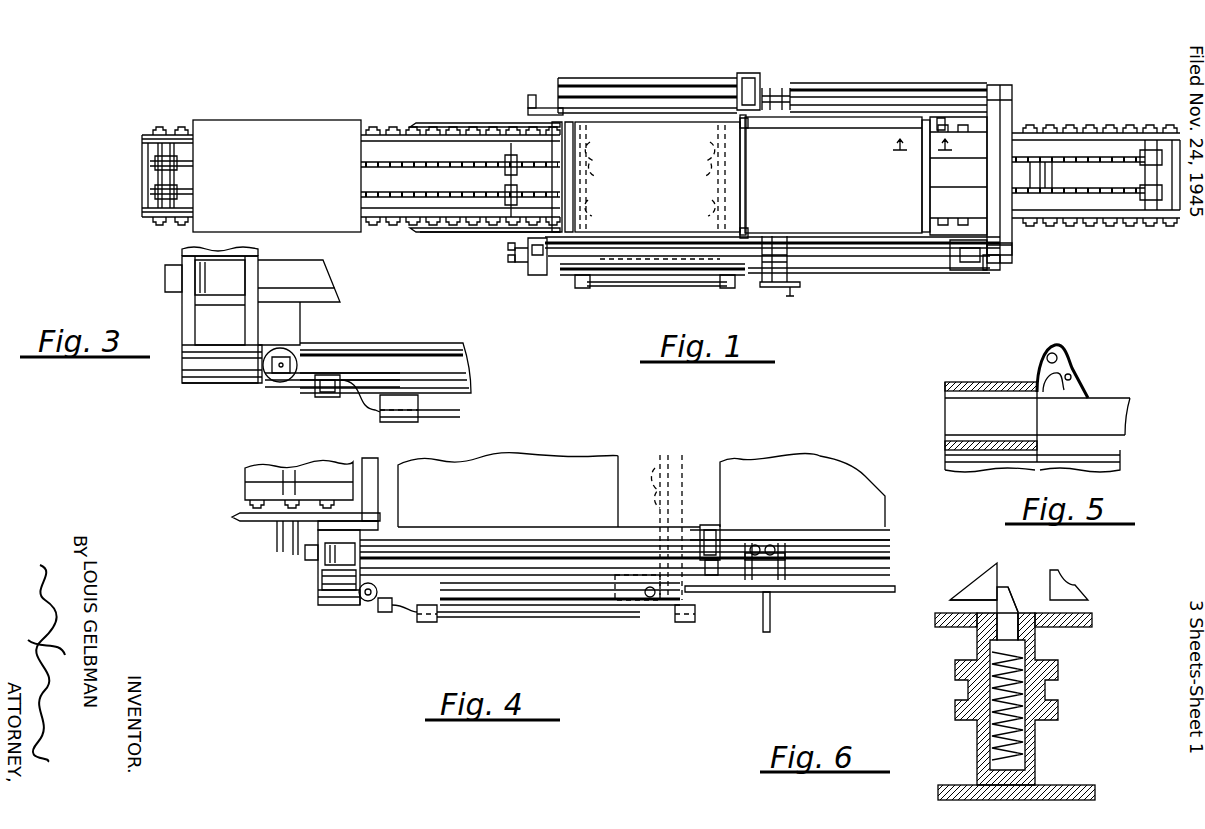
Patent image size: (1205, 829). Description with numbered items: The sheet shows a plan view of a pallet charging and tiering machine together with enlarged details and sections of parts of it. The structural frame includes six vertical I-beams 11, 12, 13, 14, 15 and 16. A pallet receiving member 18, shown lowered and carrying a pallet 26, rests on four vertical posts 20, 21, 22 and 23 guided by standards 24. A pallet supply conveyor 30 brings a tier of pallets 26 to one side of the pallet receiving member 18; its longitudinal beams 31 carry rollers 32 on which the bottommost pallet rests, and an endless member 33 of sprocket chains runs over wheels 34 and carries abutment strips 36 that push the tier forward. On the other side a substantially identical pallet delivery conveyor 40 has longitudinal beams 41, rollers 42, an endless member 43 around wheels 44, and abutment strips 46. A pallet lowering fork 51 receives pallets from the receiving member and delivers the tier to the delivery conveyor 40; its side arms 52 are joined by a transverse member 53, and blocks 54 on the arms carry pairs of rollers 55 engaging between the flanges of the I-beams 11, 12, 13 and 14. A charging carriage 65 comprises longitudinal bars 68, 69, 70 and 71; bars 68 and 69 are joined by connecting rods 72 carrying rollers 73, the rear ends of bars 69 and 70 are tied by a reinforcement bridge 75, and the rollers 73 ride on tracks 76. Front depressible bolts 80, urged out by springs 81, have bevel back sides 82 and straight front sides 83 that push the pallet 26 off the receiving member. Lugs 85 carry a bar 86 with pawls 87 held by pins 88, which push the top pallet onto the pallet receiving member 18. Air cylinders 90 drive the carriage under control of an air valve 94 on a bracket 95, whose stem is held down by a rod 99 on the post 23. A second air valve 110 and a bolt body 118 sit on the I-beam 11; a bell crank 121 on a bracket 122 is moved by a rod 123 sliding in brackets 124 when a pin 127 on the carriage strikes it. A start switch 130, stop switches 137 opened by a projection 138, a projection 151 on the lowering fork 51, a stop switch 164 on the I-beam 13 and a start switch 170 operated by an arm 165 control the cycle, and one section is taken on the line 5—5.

In FIG. 1, the section line 5 is at (952, 150).
In FIG. 1, the vertical I-beam 11 is at (528, 260).
In FIG. 3, the vertical I-beam 11 is at (187, 330).
In FIG. 4, the vertical I-beam 11 is at (322, 573).
In FIG. 1, the vertical I-beam 12 is at (530, 93).
In FIG. 1, the vertical I-beam 13 is at (780, 265).
In FIG. 1, the vertical I-beam 14 is at (780, 90).
In FIG. 1, the vertical I-beam 15 is at (1012, 250).
In FIG. 1, the vertical I-beam 16 is at (1012, 95).
In FIG. 1, the pallet receiving member 18 is at (702, 58).
In FIG. 1, the vertical post 20 is at (595, 203).
In FIG. 1, the vertical post 21 is at (597, 150).
In FIG. 1, the vertical post 22 is at (710, 148).
In FIG. 1, the vertical post 23 is at (710, 200).
In FIG. 4, the vertical post 23 is at (658, 470).
In FIG. 1, the standards 24 is at (597, 220).
In FIG. 1, the pallet 26 is at (675, 128).
In FIG. 4, the pallet 26 is at (790, 483).
In FIG. 5, the pallet 26 is at (958, 438).
In FIG. 6, the pallet 26 is at (1067, 583).
In FIG. 1, the pallet supply conveyor 30 is at (1089, 117).
In FIG. 1, the longitudinal beams 31 is at (1123, 213).
In FIG. 1, the rollers 32 is at (1092, 226).
In FIG. 1, the endless member 33 is at (1052, 190).
In FIG. 1, the wheels 34 is at (1145, 190).
In FIG. 1, the abutment strips 36 is at (1135, 175).
In FIG. 1, the pallet delivery conveyor 40 is at (132, 216).
In FIG. 1, the longitudinal beams 41 is at (142, 216).
In FIG. 4, the longitudinal beams 41 is at (245, 488).
In FIG. 1, the rollers 42 is at (162, 226).
In FIG. 4, the rollers 42 is at (245, 505).
In FIG. 1, the endless member 43 is at (423, 195).
In FIG. 1, the wheels 44 is at (492, 189).
In FIG. 1, the abutment strips 46 is at (376, 178).
In FIG. 1, the pallet lowering fork 51 is at (413, 241).
In FIG. 4, the pallet lowering fork 51 is at (233, 520).
In FIG. 1, the side arms 52 is at (448, 233).
In FIG. 4, the side arms 52 is at (248, 518).
In FIG. 1, the transverse member 53 is at (557, 175).
In FIG. 4, the transverse member 53 is at (383, 448).
In FIG. 1, the blocks 54 is at (507, 243).
In FIG. 3, the blocks 54 is at (258, 252).
In FIG. 4, the blocks 54 is at (350, 530).
In FIG. 3, the rollers 55 is at (205, 276).
In FIG. 4, the rollers 55 is at (345, 545).
In FIG. 1, the charging carriage 65 is at (846, 76).
In FIG. 1, the longitudinal bar 68 is at (927, 273).
In FIG. 4, the longitudinal bar 68 is at (857, 593).
In FIG. 6, the longitudinal bar 68 is at (1080, 787).
In FIG. 1, the longitudinal bar 69 is at (808, 233).
In FIG. 4, the longitudinal bar 69 is at (890, 530).
In FIG. 6, the longitudinal bar 69 is at (1093, 620).
In FIG. 1, the longitudinal bar 70 is at (815, 110).
In FIG. 5, the longitudinal bar 70 is at (1105, 407).
In FIG. 1, the longitudinal bar 71 is at (863, 83).
In FIG. 6, the connecting rods 72 is at (1022, 617).
In FIG. 1, the rollers 73 is at (933, 267).
In FIG. 4, the rollers 73 is at (712, 550).
In FIG. 6, the rollers 73 is at (1040, 693).
In FIG. 1, the reinforcement bridge 75 is at (985, 173).
In FIG. 1, the tracks 76 is at (843, 248).
In FIG. 3, the tracks 76 is at (335, 298).
In FIG. 4, the tracks 76 is at (890, 553).
In FIG. 5, the tracks 76 is at (1120, 453).
In FIG. 1, the depressible bolts 80 is at (743, 233).
In FIG. 4, the depressible bolts 80 is at (705, 530).
In FIG. 6, the depressible bolts 80 is at (1003, 587).
In FIG. 6, the springs 81 is at (1010, 755).
In FIG. 6, the bevel back sides 82 is at (1018, 592).
In FIG. 6, the straight front sides 83 is at (997, 592).
In FIG. 1, the upwardly directed lugs 85 is at (915, 240).
In FIG. 5, the upwardly directed lugs 85 is at (1072, 365).
In FIG. 1, the bar 86 is at (930, 172).
In FIG. 5, the bar 86 is at (1053, 358).
In FIG. 1, the pawls 87 is at (922, 222).
In FIG. 5, the pawls 87 is at (1045, 370).
In FIG. 5, the pins 88 is at (1075, 377).
In FIG. 1, the air cylinders 90 is at (617, 267).
In FIG. 3, the air cylinders 90 is at (406, 338).
In FIG. 4, the air cylinders 90 is at (533, 590).
In FIG. 4, the air valve 94 is at (662, 600).
In FIG. 4, the bracket 95 is at (632, 587).
In FIG. 1, the rod 99 is at (713, 222).
In FIG. 4, the rod 99 is at (655, 500).
In FIG. 3, the air valve 110 is at (200, 372).
In FIG. 4, the air valve 110 is at (342, 607).
In FIG. 3, the body 118 is at (285, 377).
In FIG. 4, the body 118 is at (368, 603).
In FIG. 3, the bell crank 121 is at (307, 372).
In FIG. 3, the bracket 122 is at (324, 395).
In FIG. 4, the bracket 122 is at (387, 615).
In FIG. 1, the rod 123 is at (758, 286).
In FIG. 3, the rod 123 is at (462, 417).
In FIG. 4, the rod 123 is at (545, 627).
In FIG. 1, the brackets 124 is at (727, 283).
In FIG. 3, the brackets 124 is at (402, 423).
In FIG. 4, the brackets 124 is at (682, 622).
In FIG. 1, the pin 127 is at (792, 284).
In FIG. 4, the pin 127 is at (767, 623).
In FIG. 1, the start switch 130 is at (993, 270).
In FIG. 4, the stop switches 137 is at (305, 560).
In FIG. 1, the projection 138 is at (513, 255).
In FIG. 4, the projection 138 is at (293, 567).
In FIG. 1, the projection 151 is at (513, 243).
In FIG. 4, the projection 151 is at (277, 550).
In FIG. 1, the stop switch 164 is at (777, 262).
In FIG. 4, the stop switch 164 is at (780, 547).
In FIG. 4, the arm 165 is at (767, 560).
In FIG. 1, the start switch 170 is at (787, 253).
In FIG. 4, the start switch 170 is at (780, 540).